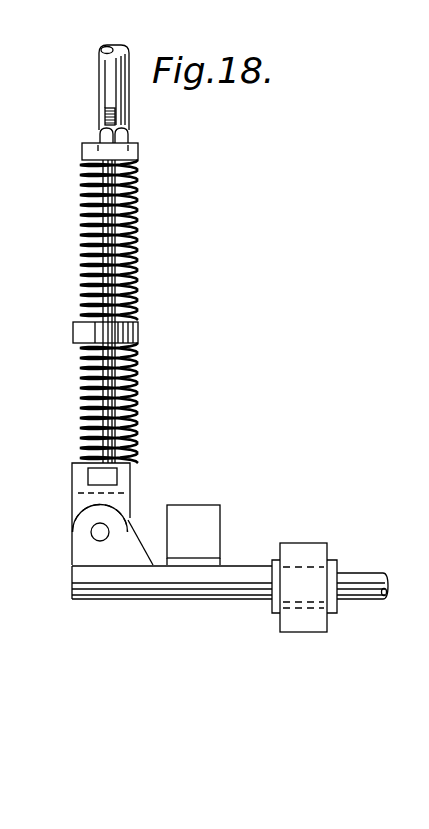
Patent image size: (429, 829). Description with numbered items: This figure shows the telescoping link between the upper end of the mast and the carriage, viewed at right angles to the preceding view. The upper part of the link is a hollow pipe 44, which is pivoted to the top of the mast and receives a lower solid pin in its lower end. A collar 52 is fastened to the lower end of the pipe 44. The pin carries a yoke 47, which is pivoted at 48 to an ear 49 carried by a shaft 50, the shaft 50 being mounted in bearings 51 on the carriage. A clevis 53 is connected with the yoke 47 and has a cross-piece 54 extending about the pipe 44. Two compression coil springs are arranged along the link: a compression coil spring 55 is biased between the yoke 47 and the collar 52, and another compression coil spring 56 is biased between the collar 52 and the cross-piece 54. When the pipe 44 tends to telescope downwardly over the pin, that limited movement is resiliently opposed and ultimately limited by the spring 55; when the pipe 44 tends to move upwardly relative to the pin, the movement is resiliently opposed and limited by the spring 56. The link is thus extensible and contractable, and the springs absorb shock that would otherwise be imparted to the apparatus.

The pipe 44 is at (103, 88).
The cross-piece 54 is at (138, 148).
The clevis 53 is at (105, 258).
The compression coil spring 56 is at (138, 234).
The collar 52 is at (139, 331).
The compression coil spring 55 is at (80, 420).
The yoke 47 is at (125, 500).
The pivot 48 is at (90, 532).
The ear 49 is at (133, 548).
The shaft 50 is at (187, 597).
The bearings 51 is at (303, 627).